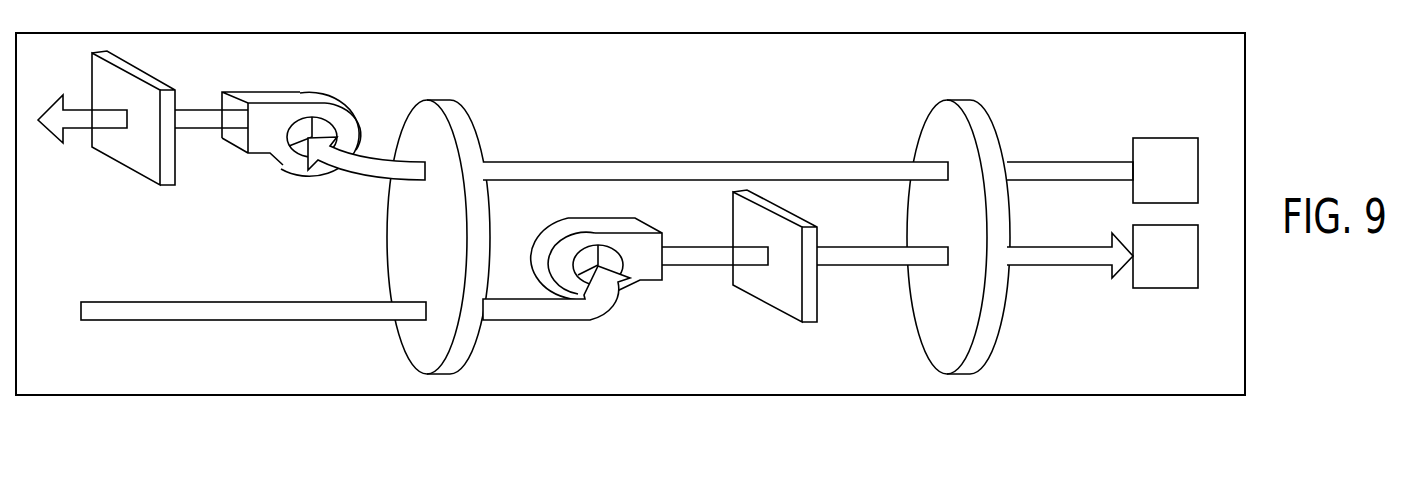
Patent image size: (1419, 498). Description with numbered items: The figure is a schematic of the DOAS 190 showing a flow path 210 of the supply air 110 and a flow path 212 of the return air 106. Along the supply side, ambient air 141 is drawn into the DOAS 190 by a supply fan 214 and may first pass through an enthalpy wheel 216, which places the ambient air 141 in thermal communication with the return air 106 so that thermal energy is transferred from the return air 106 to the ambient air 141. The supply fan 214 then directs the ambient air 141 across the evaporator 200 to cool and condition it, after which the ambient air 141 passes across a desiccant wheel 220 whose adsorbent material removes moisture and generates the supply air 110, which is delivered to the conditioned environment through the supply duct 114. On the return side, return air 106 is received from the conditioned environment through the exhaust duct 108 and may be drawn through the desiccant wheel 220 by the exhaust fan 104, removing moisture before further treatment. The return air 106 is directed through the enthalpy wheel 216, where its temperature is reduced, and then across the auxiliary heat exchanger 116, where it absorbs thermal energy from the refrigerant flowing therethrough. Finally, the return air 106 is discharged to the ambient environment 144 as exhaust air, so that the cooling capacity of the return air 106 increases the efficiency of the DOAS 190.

The exhaust fan 104 is at (277, 97).
The return air 106 is at (808, 131).
The exhaust duct 108 is at (1167, 138).
The supply air 110 is at (1088, 253).
The supply duct 114 is at (1167, 288).
The auxiliary heat exchanger 116 is at (134, 69).
The ambient air 141 is at (283, 308).
The ambient environment 144 is at (105, 229).
The DOAS 190 is at (1259, 121).
The evaporator 200 is at (776, 207).
The flow path of the supply air 210 is at (691, 323).
The flow path of the return air 212 is at (779, 133).
The supply fan 214 is at (623, 223).
The enthalpy wheel 216 is at (440, 100).
The desiccant wheel 220 is at (960, 97).